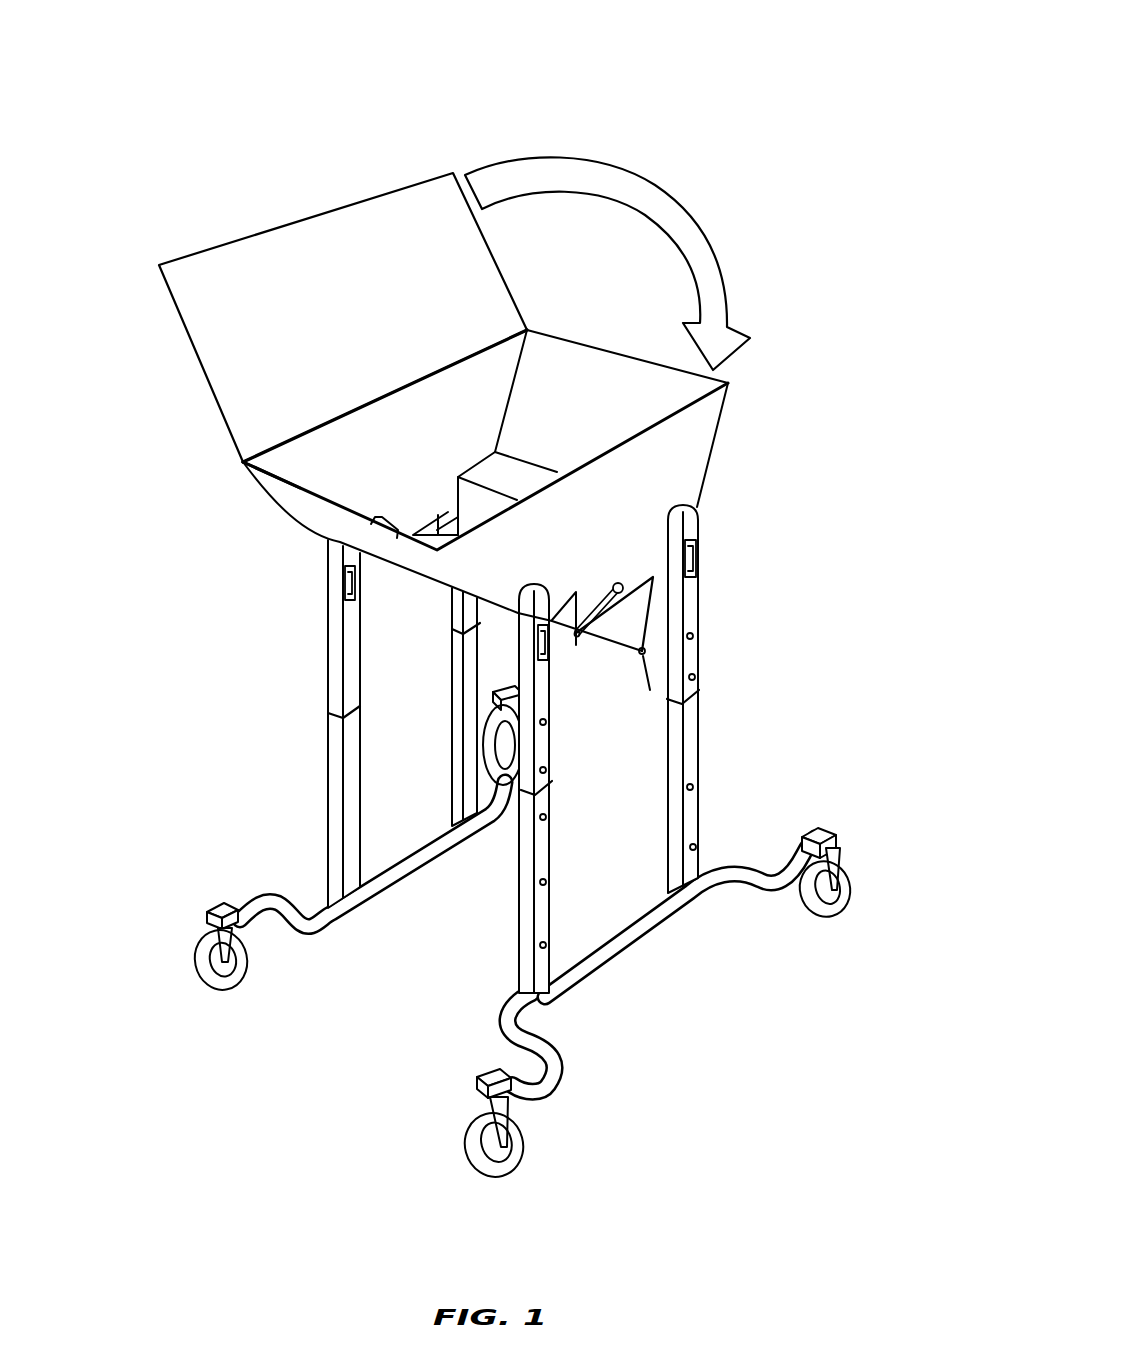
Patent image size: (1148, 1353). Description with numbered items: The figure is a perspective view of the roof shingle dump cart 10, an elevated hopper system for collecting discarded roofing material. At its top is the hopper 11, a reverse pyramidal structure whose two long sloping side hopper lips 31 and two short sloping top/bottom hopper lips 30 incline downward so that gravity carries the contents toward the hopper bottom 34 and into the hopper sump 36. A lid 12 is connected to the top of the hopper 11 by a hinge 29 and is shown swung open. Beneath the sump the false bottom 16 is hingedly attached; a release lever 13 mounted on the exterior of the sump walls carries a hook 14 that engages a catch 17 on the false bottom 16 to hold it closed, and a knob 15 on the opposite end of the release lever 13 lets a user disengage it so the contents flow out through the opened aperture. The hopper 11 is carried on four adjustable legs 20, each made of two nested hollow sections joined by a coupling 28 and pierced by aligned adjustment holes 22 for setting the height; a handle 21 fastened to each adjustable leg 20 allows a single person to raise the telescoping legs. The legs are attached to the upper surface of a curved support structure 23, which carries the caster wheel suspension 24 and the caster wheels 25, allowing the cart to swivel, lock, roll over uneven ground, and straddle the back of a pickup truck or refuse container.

The roof shingle dump cart 10 is at (840, 150).
The hopper 11 is at (732, 433).
The lid 12 is at (433, 290).
The release lever 13 is at (602, 598).
The hook 14 is at (567, 636).
The knob 15 is at (653, 577).
The false bottom 16 is at (622, 633).
The catch 17 is at (656, 675).
The adjustable leg 20 is at (336, 812).
The handle 21 is at (537, 648).
The adjustment hole 22 is at (602, 782).
The support structure 23 is at (313, 917).
The caster wheel suspension 24 is at (213, 928).
The caster wheel 25 is at (213, 985).
The coupling 28 is at (328, 712).
The hinge 29 is at (241, 465).
The top/bottom hopper lip 30 is at (313, 513).
The side hopper lip 31 is at (310, 465).
The hopper bottom 34 is at (508, 475).
The hopper sump 36 is at (430, 477).